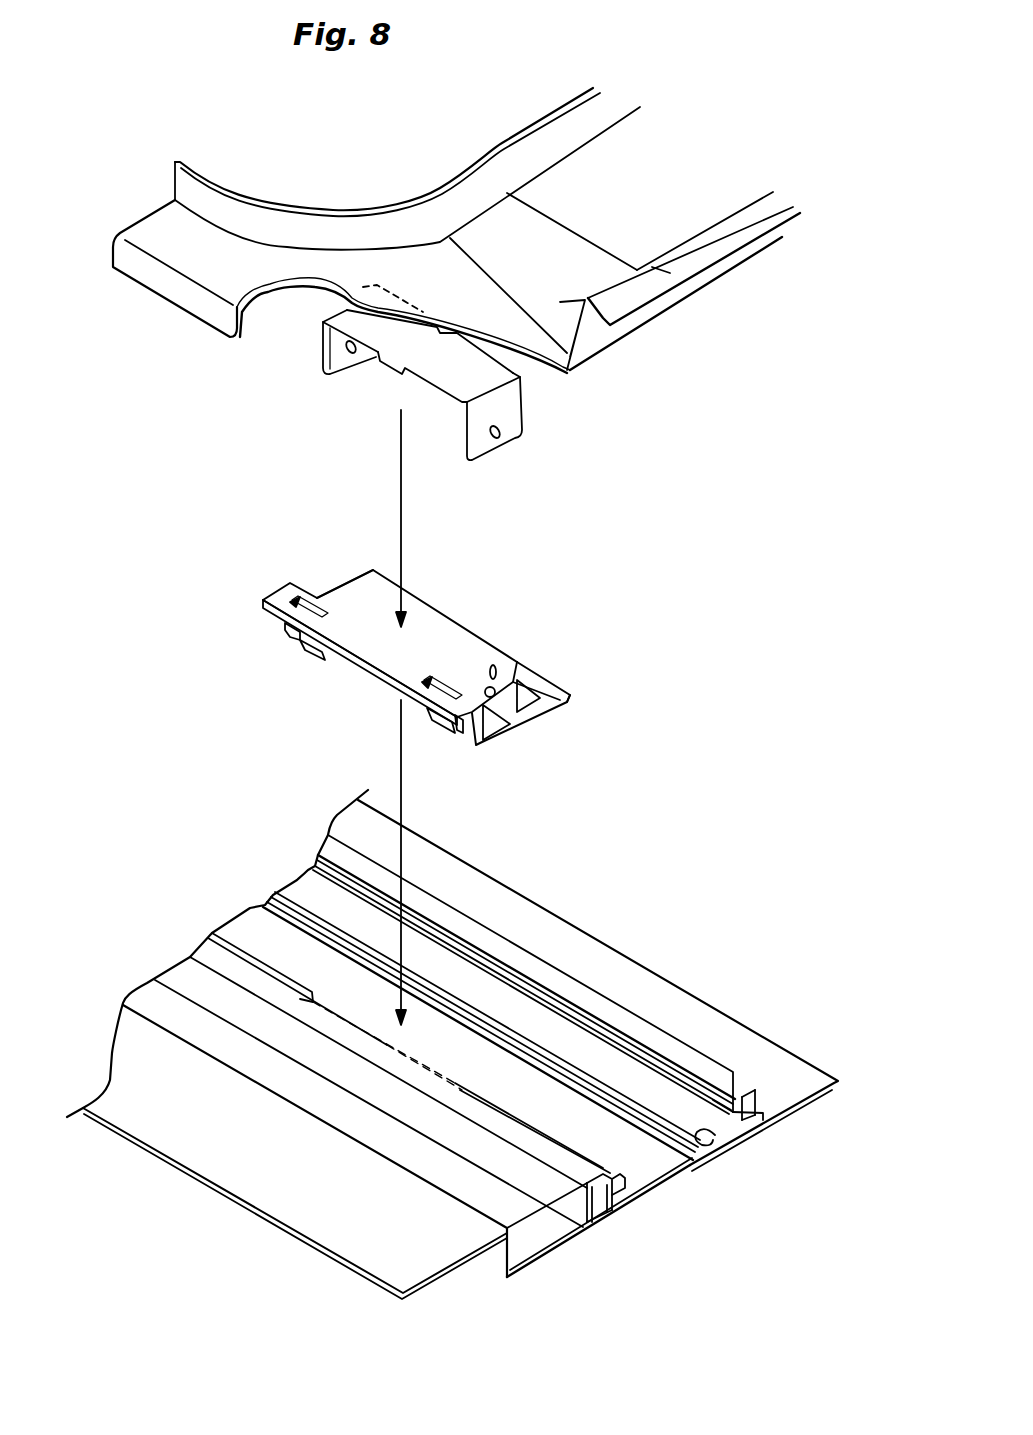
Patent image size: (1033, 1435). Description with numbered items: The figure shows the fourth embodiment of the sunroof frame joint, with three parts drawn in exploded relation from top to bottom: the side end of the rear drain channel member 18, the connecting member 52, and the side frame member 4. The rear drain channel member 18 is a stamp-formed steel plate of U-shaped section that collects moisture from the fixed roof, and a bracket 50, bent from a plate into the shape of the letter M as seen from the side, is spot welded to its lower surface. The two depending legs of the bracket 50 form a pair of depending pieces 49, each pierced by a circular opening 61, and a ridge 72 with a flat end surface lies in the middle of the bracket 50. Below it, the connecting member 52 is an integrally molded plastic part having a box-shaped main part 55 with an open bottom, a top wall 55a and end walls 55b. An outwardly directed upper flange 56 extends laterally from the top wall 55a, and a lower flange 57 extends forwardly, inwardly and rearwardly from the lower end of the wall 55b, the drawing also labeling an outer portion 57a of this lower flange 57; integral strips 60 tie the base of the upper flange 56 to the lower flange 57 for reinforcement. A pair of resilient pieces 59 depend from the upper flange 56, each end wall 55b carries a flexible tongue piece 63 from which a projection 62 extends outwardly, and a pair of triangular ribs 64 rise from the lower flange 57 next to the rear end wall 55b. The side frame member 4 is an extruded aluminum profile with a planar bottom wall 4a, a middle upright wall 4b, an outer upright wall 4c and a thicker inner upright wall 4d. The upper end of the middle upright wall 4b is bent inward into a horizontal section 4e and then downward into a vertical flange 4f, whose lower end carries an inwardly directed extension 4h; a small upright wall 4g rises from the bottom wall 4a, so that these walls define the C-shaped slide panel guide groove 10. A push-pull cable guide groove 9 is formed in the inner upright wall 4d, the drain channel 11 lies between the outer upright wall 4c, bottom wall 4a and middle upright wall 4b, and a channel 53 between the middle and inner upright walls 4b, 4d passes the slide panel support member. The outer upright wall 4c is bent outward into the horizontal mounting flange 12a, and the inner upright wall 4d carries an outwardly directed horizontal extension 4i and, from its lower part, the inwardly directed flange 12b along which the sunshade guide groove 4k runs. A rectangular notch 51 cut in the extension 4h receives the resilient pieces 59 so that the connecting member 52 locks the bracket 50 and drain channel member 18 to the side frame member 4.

The rear drain channel member 18 is at (550, 117).
The depending pieces 49 is at (322, 348).
The bracket 50 is at (415, 412).
The circular opening 61 is at (355, 360).
The ridge 72 is at (430, 385).
The connecting member 52 is at (437, 679).
The main part 55 is at (455, 628).
The top wall 55a is at (357, 600).
The side wall 55b is at (507, 652).
The upper flange 56 is at (377, 657).
The lower flange 57 is at (579, 703).
The plate end 57a is at (553, 680).
The resilient pieces 59 is at (308, 645).
The integral strips 60 is at (283, 627).
The projection 62 is at (500, 707).
The tongue piece 63 is at (497, 670).
The triangular ribs 64 is at (547, 717).
The side frame member 4 is at (469, 1065).
The bottom wall 4a is at (680, 1187).
The middle upright wall 4b is at (565, 1203).
The outer upright wall 4c is at (505, 1245).
The inner upright wall 4d is at (738, 1130).
The horizontal section 4e is at (497, 1113).
The vertical flange 4f is at (627, 1177).
The small upright wall 4g is at (620, 1195).
The inwardly directed extension 4h is at (633, 1200).
The outwardly directed horizontal extension 4i is at (657, 1087).
The sunshade guide groove 4k is at (745, 1100).
The push-pull cable guide groove 9 is at (707, 1142).
The slide panel guide groove 10 is at (608, 1220).
The drain channel 11 is at (527, 1240).
The horizontal mounting flange 12a is at (228, 1163).
The horizontal flange 12b is at (800, 1103).
The rectangular notch 51 is at (390, 1043).
The channel 53 is at (583, 1120).